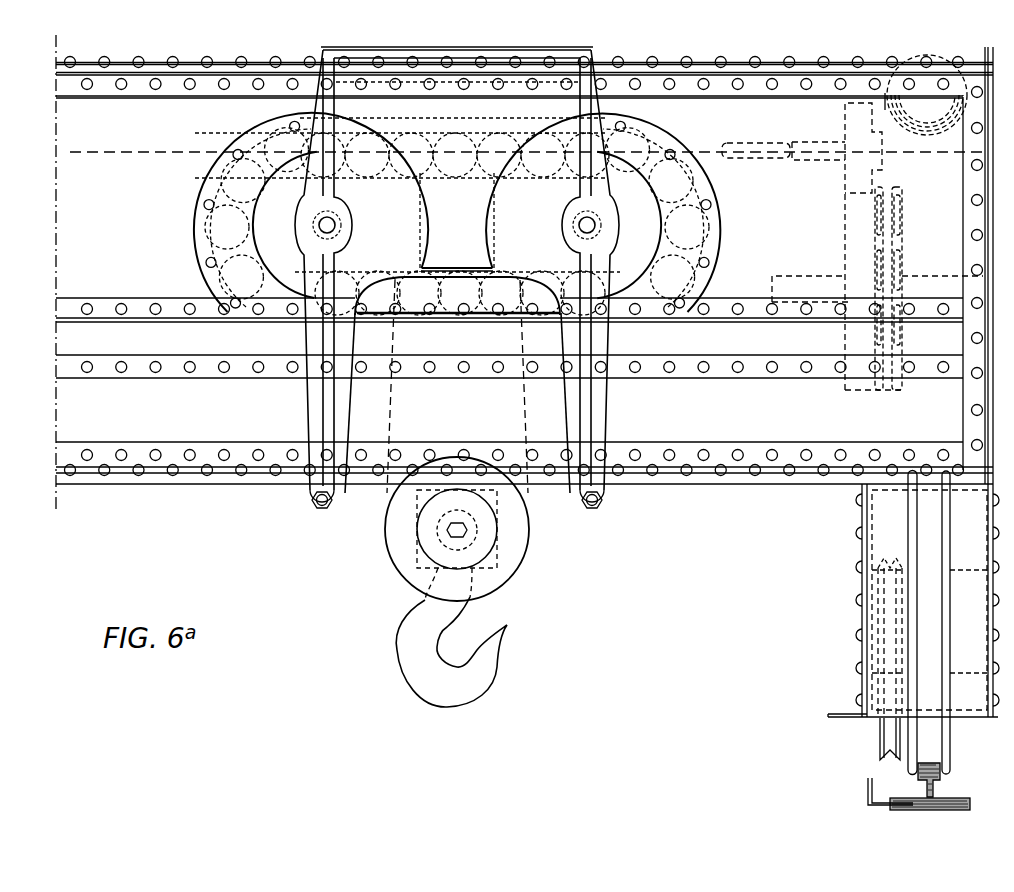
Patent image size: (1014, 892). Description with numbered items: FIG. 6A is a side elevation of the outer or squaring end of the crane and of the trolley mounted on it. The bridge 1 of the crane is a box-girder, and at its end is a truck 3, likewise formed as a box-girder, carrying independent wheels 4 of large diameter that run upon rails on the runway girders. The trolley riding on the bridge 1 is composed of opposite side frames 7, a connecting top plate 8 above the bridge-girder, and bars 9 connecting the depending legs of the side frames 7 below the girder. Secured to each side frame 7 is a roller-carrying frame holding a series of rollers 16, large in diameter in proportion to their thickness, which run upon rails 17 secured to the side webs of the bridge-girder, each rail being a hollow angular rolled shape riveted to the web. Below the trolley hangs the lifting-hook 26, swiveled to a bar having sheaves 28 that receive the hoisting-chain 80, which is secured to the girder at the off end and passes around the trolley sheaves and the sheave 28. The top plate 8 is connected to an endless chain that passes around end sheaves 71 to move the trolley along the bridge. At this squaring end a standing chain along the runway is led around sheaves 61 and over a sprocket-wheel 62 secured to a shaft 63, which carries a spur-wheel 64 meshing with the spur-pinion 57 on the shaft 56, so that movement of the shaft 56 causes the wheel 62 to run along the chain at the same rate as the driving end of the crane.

The bridge 1 is at (524, 273).
The truck 3 is at (843, 704).
The wheels 4 is at (919, 641).
The side frames 7 is at (457, 270).
The top plate 8 is at (457, 39).
The bars 9 is at (322, 512).
The rollers 16 is at (378, 318).
The rails 17 is at (509, 338).
The lifting-hook 26 is at (458, 637).
The sheaves 28 is at (463, 529).
The shaft 56 is at (760, 143).
The spur-pinion 57 is at (873, 246).
The sheaves 61 is at (880, 652).
The sprocket-wheel 62 is at (899, 240).
The shaft 63 is at (877, 282).
The spur-wheel 64 is at (868, 288).
The end sheaves 71 is at (926, 103).
The hoisting-chain 80 is at (528, 146).